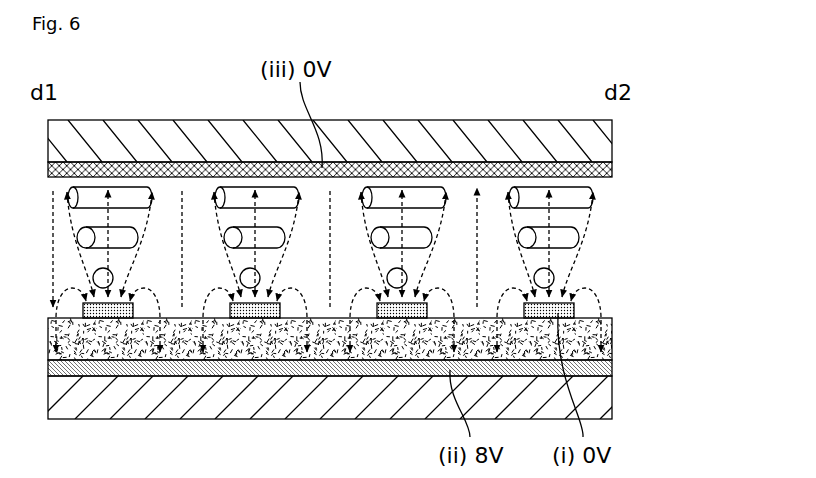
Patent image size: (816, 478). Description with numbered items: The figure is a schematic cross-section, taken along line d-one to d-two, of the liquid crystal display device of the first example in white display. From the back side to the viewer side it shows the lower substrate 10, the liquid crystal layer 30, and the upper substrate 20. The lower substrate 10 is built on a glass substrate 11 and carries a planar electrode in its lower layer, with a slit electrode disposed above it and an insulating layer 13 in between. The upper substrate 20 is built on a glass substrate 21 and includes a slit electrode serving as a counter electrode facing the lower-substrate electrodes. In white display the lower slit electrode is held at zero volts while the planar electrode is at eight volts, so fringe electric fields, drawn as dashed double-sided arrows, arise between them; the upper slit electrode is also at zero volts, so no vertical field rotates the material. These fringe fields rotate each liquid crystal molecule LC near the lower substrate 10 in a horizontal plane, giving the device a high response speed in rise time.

The lower substrate 10 is at (690, 302).
The glass substrate 11 is at (602, 397).
The insulating layer 13 is at (600, 343).
The upper substrate 20 is at (690, 120).
The glass substrate 21 is at (602, 150).
The liquid crystal layer 30 is at (690, 182).
The liquid crystal molecule LC is at (553, 238).